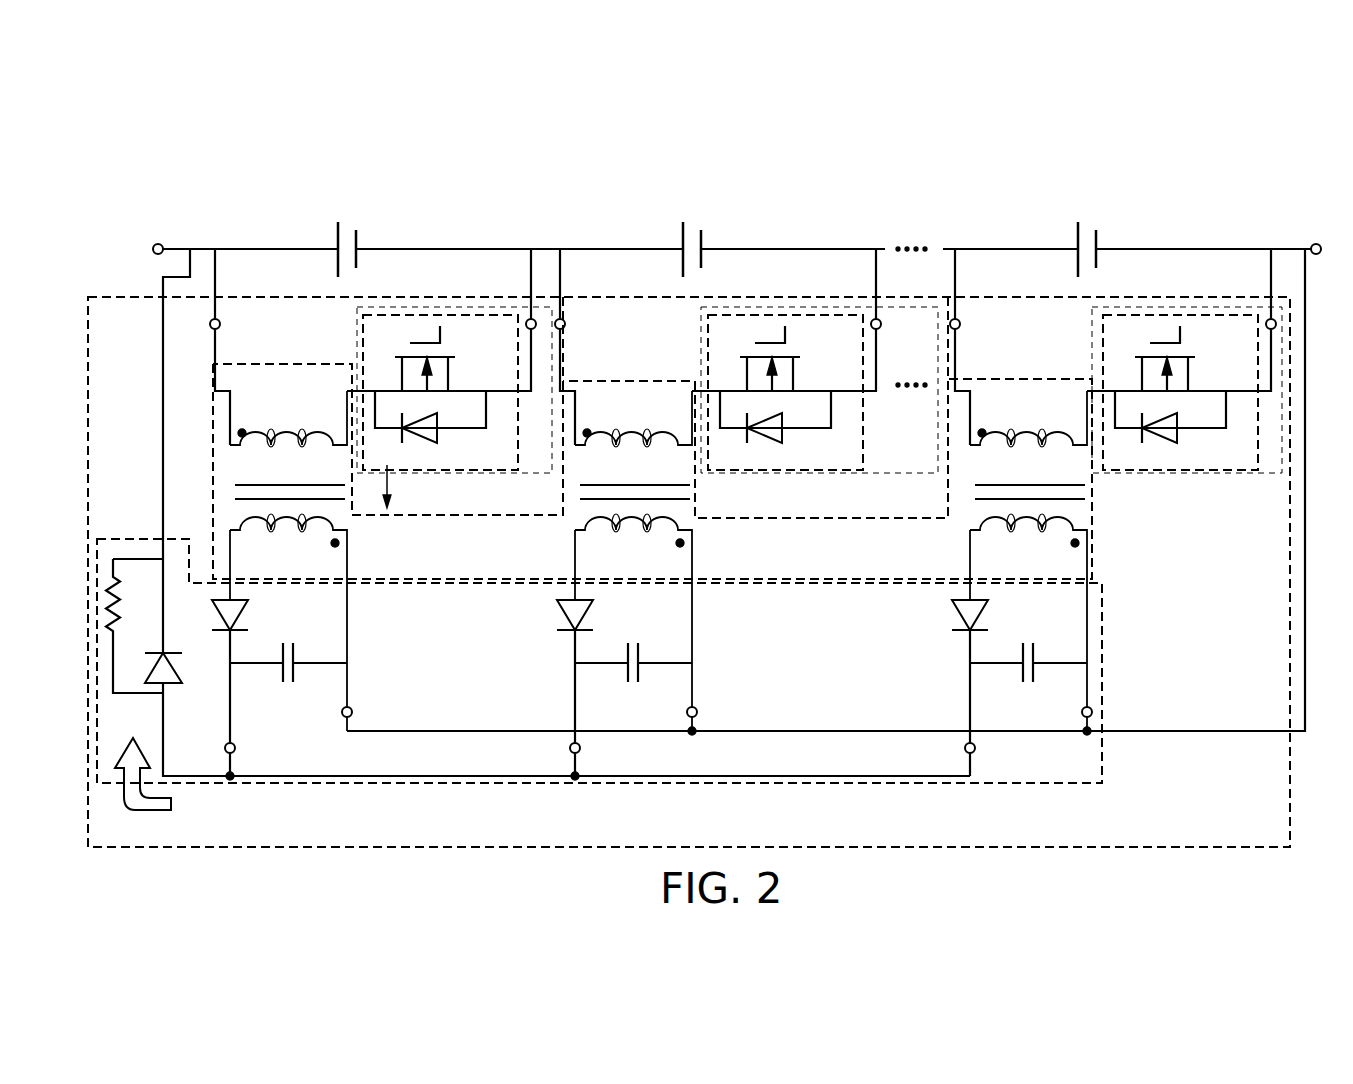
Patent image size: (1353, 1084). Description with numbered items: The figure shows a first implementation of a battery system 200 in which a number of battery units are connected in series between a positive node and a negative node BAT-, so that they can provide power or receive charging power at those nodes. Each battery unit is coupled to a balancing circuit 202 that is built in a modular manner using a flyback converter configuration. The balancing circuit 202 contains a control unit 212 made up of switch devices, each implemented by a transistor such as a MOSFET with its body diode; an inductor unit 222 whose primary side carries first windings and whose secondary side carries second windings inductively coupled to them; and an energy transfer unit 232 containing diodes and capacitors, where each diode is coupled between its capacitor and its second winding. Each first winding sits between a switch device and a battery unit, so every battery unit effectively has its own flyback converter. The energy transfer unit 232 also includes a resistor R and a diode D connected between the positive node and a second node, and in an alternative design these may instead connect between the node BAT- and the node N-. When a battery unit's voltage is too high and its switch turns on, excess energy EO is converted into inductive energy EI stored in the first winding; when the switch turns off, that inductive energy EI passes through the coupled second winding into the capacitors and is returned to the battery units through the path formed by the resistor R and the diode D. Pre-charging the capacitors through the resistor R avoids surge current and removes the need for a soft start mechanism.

The battery system 200 is at (715, 501).
The balancing circuit 202 is at (1180, 847).
The control unit 212 is at (437, 297).
The inductor unit 222 is at (1093, 545).
The energy transfer unit 232 is at (1103, 655).
The resistor R is at (134, 626).
The diode D is at (152, 669).
The excess energy EO is at (409, 486).
The inductive energy EI is at (143, 793).
The node N- is at (1080, 746).
The node BAT- is at (1290, 228).